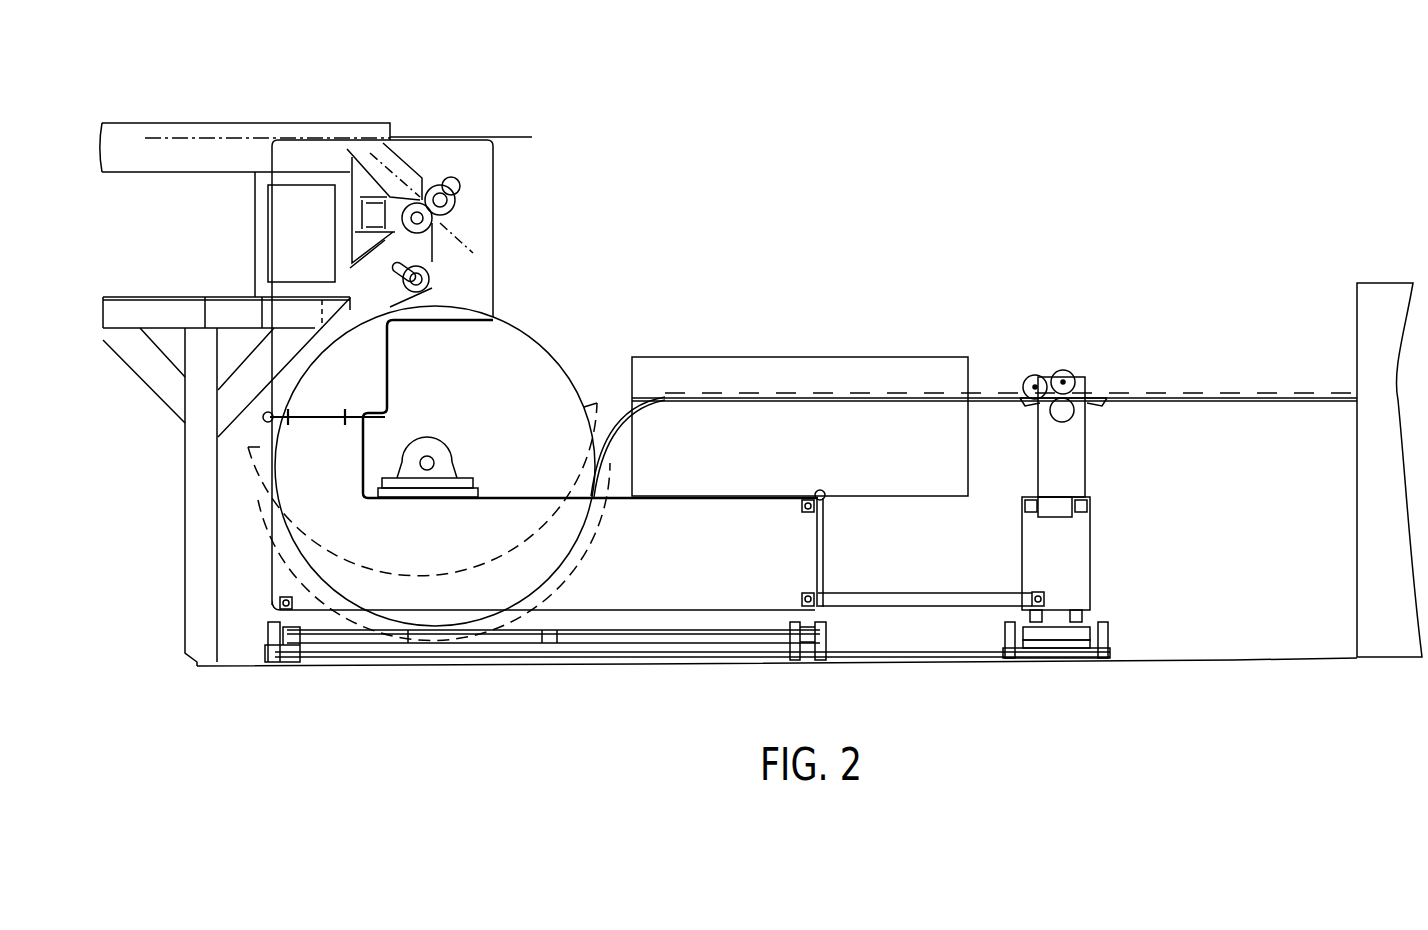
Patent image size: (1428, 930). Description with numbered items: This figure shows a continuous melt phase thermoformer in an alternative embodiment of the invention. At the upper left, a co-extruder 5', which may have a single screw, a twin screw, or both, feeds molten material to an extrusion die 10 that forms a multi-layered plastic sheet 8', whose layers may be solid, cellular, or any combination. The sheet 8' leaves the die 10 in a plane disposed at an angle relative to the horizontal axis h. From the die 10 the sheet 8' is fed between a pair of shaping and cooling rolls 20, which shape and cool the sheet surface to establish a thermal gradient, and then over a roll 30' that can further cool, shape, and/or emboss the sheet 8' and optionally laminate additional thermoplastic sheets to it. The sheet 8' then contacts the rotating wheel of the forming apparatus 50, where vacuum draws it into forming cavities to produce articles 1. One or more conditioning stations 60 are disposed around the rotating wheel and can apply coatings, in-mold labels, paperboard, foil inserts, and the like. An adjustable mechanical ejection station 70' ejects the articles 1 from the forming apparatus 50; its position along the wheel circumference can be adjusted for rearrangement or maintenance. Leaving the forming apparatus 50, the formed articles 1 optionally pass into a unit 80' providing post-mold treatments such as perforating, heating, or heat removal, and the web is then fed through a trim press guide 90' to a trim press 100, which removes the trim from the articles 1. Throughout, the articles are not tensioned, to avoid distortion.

The article 1 is at (616, 428).
The co-extruder 5' is at (245, 124).
The horizontal axis h is at (161, 146).
The multi-layered plastic sheet 8' is at (438, 265).
The extrusion die 10 is at (417, 160).
The shaping and cooling rolls 20 is at (459, 215).
The roll 30' is at (439, 312).
The forming apparatus 50 is at (537, 336).
The conditioning stations 60 is at (243, 485).
The adjustable mechanical ejection station 70' is at (450, 551).
The post-mold treatment unit 80' is at (994, 408).
The trim press guide 90' is at (1056, 489).
The trim press 100 is at (1353, 317).